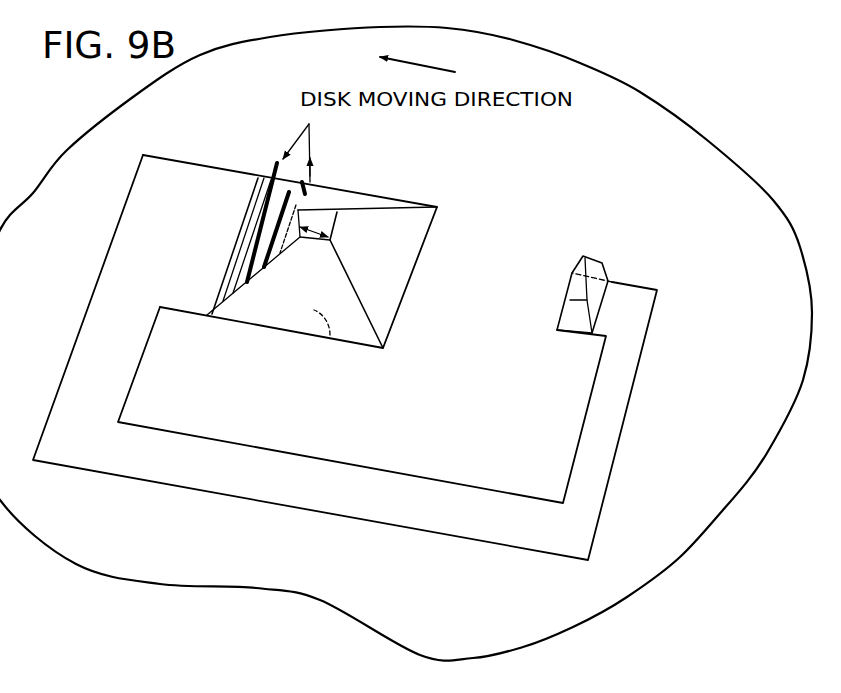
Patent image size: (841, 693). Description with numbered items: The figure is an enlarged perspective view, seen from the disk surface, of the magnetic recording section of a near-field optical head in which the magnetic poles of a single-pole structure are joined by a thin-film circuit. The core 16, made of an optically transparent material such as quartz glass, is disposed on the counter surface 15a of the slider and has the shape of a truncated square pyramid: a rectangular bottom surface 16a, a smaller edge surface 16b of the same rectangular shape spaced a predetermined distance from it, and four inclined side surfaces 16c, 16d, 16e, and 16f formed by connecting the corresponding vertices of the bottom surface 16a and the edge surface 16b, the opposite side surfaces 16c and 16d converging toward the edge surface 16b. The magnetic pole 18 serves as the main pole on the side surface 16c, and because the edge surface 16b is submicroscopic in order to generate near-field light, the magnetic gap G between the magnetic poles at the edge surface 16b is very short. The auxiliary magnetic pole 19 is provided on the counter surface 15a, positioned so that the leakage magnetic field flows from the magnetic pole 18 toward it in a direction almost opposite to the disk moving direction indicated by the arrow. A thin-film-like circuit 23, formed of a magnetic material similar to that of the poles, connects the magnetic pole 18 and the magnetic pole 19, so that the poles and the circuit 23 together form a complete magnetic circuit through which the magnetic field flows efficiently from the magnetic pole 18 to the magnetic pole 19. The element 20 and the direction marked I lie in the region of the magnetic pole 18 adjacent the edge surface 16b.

The counter surface 15a is at (565, 145).
The circuit 23 is at (320, 486).
The magnetic pole 19 is at (603, 264).
The core 16 is at (438, 206).
The bottom surface 16a is at (330, 335).
The edge surface 16b is at (315, 215).
The side surface 16c is at (228, 273).
The side surface 16d is at (382, 248).
The side surface 16e is at (365, 203).
The side surface 16f is at (280, 308).
The magnetic pole 18 is at (257, 230).
The heater 20 is at (253, 212).
The magnetic gap G is at (310, 243).
The current direction I is at (297, 145).